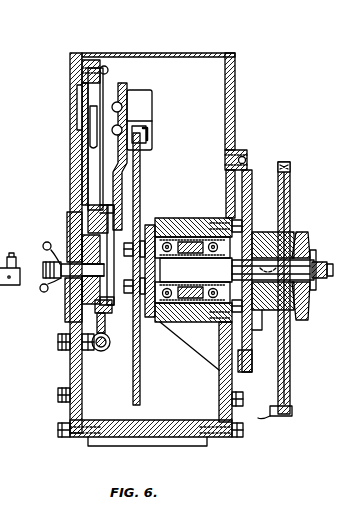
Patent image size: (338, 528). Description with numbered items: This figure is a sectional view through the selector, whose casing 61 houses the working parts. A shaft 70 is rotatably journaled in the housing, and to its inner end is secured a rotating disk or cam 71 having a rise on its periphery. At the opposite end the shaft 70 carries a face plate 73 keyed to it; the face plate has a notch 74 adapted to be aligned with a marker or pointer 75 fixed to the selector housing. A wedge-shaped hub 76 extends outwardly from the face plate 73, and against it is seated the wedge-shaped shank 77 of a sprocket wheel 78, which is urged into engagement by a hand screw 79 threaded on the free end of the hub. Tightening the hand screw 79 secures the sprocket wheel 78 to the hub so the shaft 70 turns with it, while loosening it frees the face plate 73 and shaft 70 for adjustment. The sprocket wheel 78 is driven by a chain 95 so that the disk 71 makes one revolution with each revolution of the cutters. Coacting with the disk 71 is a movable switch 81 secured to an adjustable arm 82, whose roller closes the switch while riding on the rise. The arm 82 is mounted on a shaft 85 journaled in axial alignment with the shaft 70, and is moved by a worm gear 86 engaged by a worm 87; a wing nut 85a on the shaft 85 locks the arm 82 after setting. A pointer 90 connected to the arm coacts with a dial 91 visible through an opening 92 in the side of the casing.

The housing 61 is at (242, 72).
The shaft 70 is at (178, 270).
The rotating disk or cam 71 is at (146, 171).
The face plate 73 is at (252, 366).
The notch 74 is at (250, 172).
The marker or pointer 75 is at (247, 158).
The wedge-shaped hub 76 is at (268, 322).
The wedge-shaped shank 77 is at (259, 235).
The sprocket wheel 78 is at (288, 190).
The hand screw 79 is at (302, 236).
The movable switch 81 is at (140, 94).
The adjustable arm 82 is at (120, 190).
The shaft 85 is at (58, 282).
The wing nut 85a is at (45, 247).
The worm gear 86 is at (112, 314).
The worm 87 is at (103, 352).
The pointer 90 is at (90, 157).
The dial 91 is at (107, 82).
The opening 92 is at (72, 103).
The chain 95 is at (292, 412).